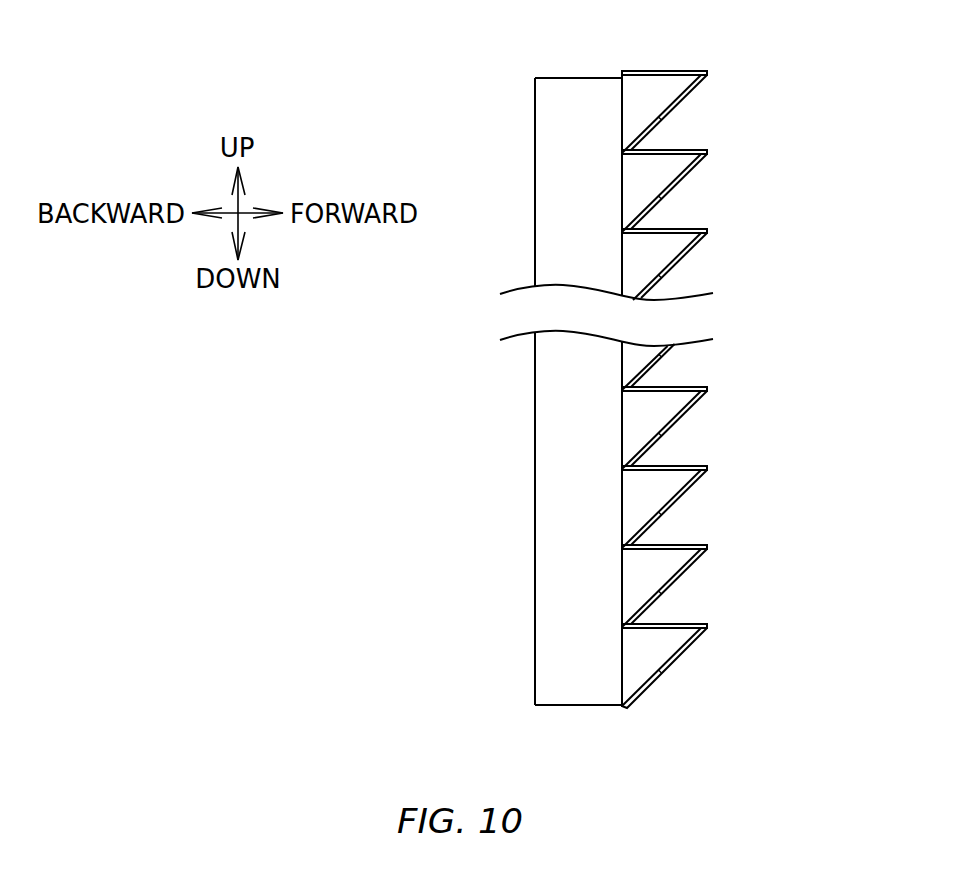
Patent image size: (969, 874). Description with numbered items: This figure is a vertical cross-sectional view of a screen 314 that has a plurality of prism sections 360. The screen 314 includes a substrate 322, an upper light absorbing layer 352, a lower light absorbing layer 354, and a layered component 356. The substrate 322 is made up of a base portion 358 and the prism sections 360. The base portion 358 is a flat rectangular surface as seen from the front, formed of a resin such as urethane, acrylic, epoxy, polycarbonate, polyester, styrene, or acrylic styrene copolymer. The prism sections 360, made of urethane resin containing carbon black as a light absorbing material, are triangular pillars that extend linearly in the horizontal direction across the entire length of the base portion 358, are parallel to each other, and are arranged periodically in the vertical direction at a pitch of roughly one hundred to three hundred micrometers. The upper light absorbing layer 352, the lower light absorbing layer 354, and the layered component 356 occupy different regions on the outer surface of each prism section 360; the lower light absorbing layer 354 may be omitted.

The screen 314 is at (885, 43).
The substrate 322 is at (448, 76).
The upper light absorbing layer 352 is at (692, 71).
The lower light absorbing layer 354 is at (660, 132).
The layered component 356 is at (684, 98).
The base portion 358 is at (543, 372).
The prism section 360 is at (640, 108).